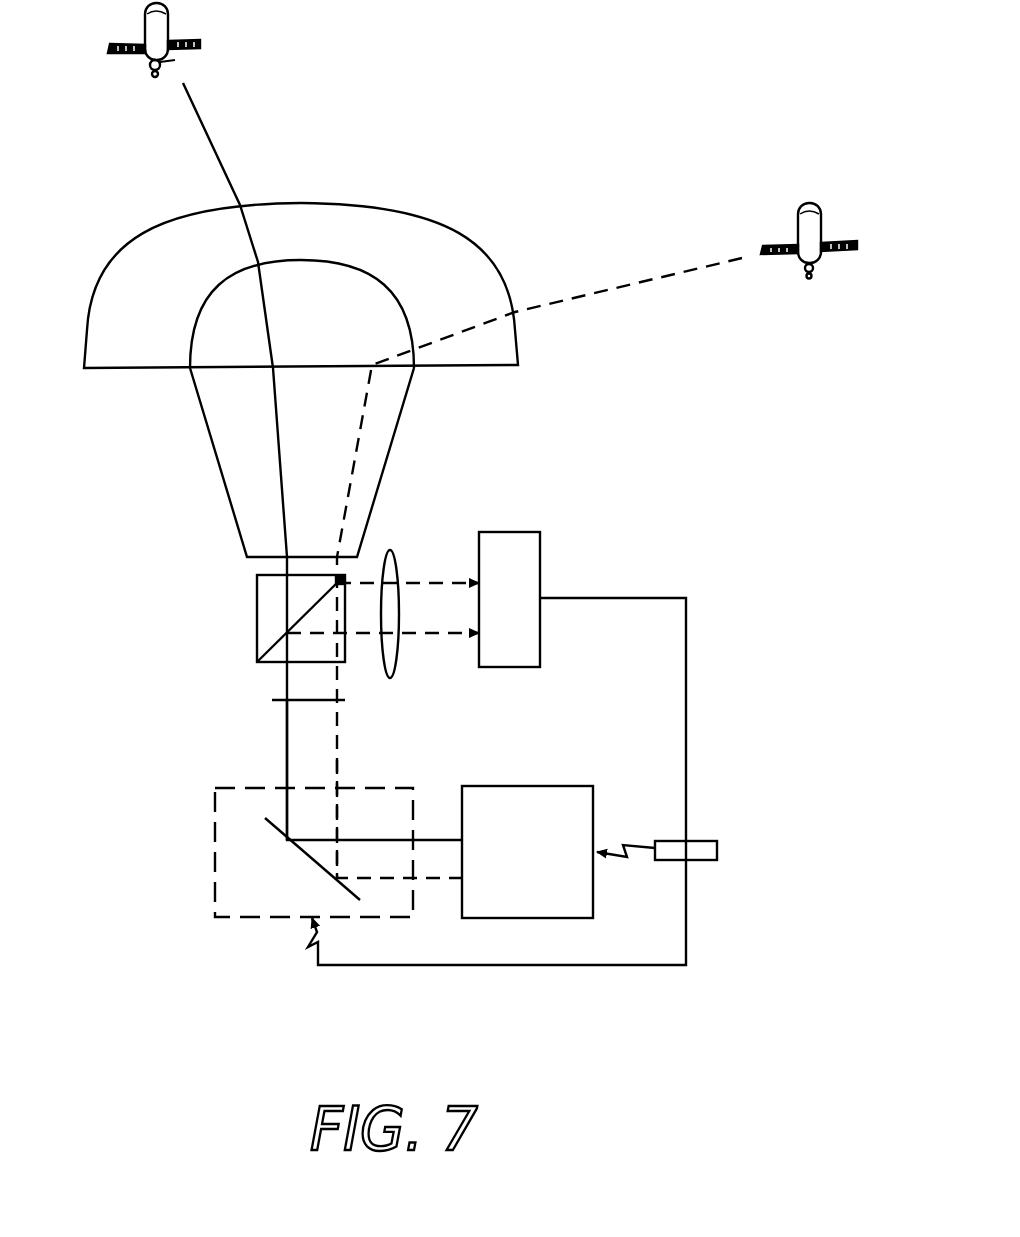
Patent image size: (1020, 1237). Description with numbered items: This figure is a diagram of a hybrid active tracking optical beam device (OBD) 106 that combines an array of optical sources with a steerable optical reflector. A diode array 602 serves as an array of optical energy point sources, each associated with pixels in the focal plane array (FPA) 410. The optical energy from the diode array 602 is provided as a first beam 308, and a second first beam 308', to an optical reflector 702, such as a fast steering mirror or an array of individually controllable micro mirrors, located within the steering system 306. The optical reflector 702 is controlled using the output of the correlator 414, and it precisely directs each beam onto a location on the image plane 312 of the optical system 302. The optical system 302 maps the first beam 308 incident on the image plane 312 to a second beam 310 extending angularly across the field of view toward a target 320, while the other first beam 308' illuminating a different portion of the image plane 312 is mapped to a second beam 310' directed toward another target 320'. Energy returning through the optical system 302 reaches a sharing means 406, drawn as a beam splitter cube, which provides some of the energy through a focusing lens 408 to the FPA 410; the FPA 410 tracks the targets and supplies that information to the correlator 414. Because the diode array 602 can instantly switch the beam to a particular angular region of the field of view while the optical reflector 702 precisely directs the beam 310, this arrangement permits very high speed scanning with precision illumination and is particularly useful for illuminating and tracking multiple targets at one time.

The optical beam device 106 is at (614, 132).
The target 320 is at (122, 58).
The second beam 310 is at (264, 461).
The target 320' is at (772, 269).
The second beam 310' is at (539, 560).
The optical system 302 is at (158, 394).
The beam splitter 406 is at (350, 652).
The focusing lens 408 is at (390, 548).
The focal plane array 410 is at (525, 532).
The first beam 308 is at (309, 756).
The image plane 312 is at (341, 700).
The first beam 308' is at (403, 812).
The steering system 306 is at (215, 819).
The optical reflector 702 is at (324, 870).
The diode array 602 is at (508, 786).
The correlator 414 is at (706, 841).